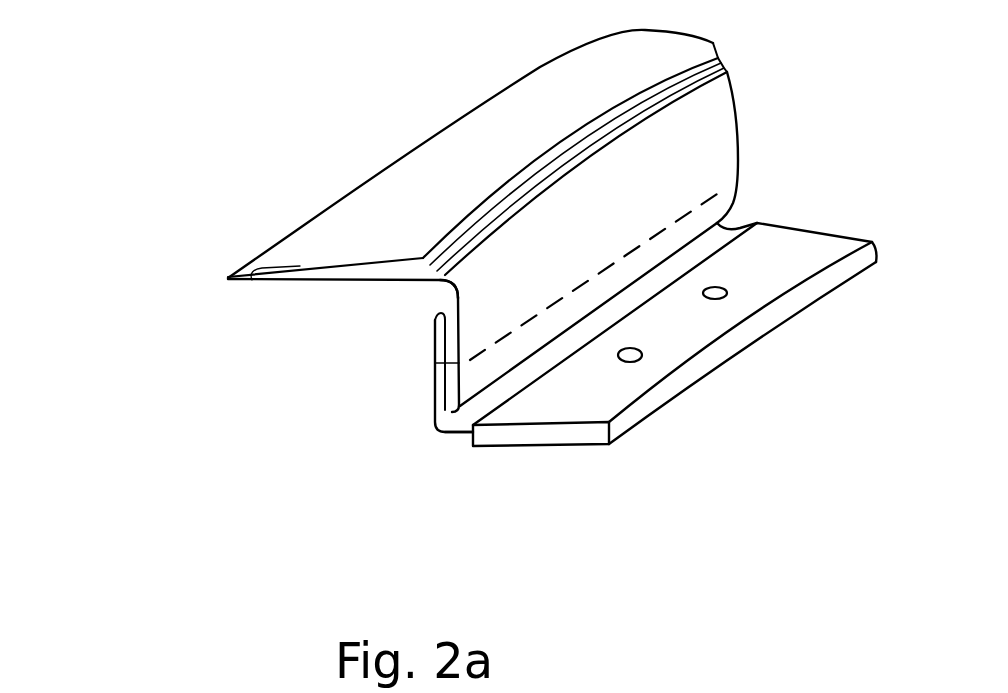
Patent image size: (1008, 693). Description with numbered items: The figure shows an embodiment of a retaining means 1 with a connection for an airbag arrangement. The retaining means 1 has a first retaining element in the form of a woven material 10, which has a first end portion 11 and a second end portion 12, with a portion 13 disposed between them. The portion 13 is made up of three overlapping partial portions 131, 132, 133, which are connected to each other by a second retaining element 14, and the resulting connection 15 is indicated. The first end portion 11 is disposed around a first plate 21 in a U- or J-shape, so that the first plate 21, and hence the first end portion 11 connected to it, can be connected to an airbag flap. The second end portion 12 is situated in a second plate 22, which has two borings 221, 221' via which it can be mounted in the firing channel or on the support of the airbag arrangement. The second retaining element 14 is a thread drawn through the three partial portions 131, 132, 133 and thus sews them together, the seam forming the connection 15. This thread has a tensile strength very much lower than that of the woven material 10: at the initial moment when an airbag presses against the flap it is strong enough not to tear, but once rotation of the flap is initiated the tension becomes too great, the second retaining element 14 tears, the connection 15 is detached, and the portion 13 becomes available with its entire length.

The retaining means 1 is at (280, 190).
The woven material 10 is at (743, 78).
The first end portion 11 is at (226, 279).
The second end portion 12 is at (468, 441).
The portion 13 is at (425, 396).
The partial portion 131 is at (433, 338).
The partial portion 132 is at (438, 330).
The partial portion 133 is at (458, 313).
The second retaining element 14 is at (735, 187).
The connection 15 is at (667, 213).
The first plate 21 is at (307, 273).
The second plate 22 is at (557, 433).
The boring 221 is at (696, 385).
The boring 221' is at (778, 328).